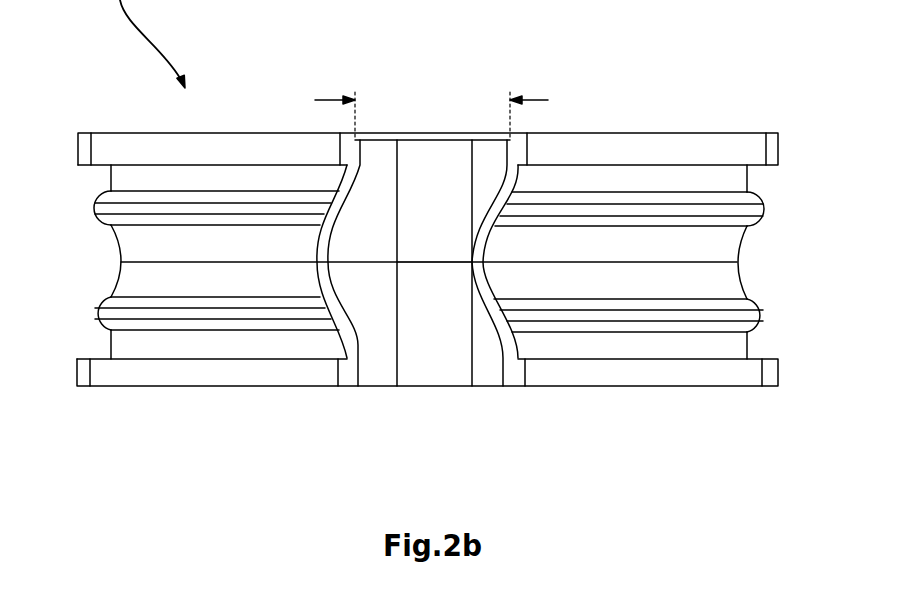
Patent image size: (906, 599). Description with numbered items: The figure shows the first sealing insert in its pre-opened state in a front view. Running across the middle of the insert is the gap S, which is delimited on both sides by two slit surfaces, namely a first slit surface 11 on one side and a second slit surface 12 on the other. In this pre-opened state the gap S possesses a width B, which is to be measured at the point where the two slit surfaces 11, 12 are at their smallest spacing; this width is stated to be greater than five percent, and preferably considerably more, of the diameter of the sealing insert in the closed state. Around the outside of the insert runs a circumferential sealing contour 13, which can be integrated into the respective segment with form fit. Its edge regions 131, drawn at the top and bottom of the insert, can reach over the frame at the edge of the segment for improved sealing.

The edge regions 131 is at (107, 145).
The circumferential sealing contour 13 is at (93, 210).
The first slit surface 11 is at (360, 332).
The second slit surface 12 is at (485, 318).
The gap S is at (457, 362).
The width B is at (431, 114).